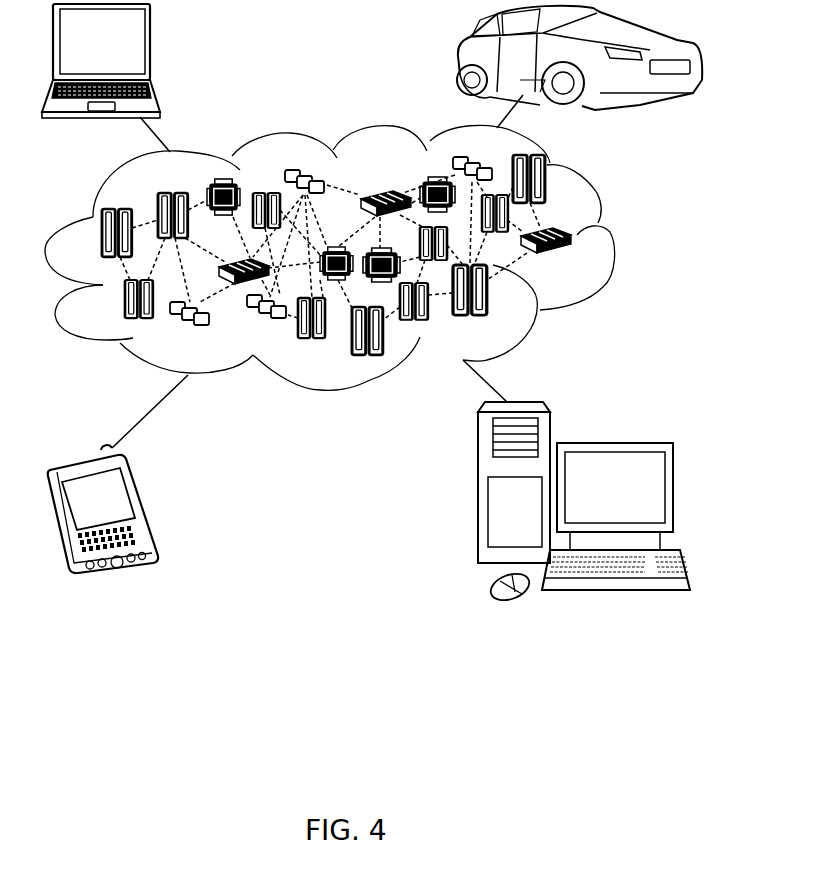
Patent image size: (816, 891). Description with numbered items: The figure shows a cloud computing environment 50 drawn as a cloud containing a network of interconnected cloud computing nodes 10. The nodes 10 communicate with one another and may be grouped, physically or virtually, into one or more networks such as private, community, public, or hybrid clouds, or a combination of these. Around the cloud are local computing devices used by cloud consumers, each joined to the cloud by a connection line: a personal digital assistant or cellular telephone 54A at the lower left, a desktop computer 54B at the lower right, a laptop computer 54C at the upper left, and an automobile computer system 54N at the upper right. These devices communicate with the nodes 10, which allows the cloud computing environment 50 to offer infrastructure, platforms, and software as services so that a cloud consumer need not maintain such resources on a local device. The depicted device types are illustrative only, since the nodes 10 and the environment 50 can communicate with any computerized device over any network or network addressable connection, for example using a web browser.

The cloud computing nodes 10 is at (582, 267).
The cloud computing environment 50 is at (613, 240).
The personal digital assistant (PDA) or cellular telephone 54A is at (142, 505).
The desktop computer 54B is at (612, 442).
The laptop computer 54C is at (152, 46).
The automobile computer system 54N is at (457, 60).